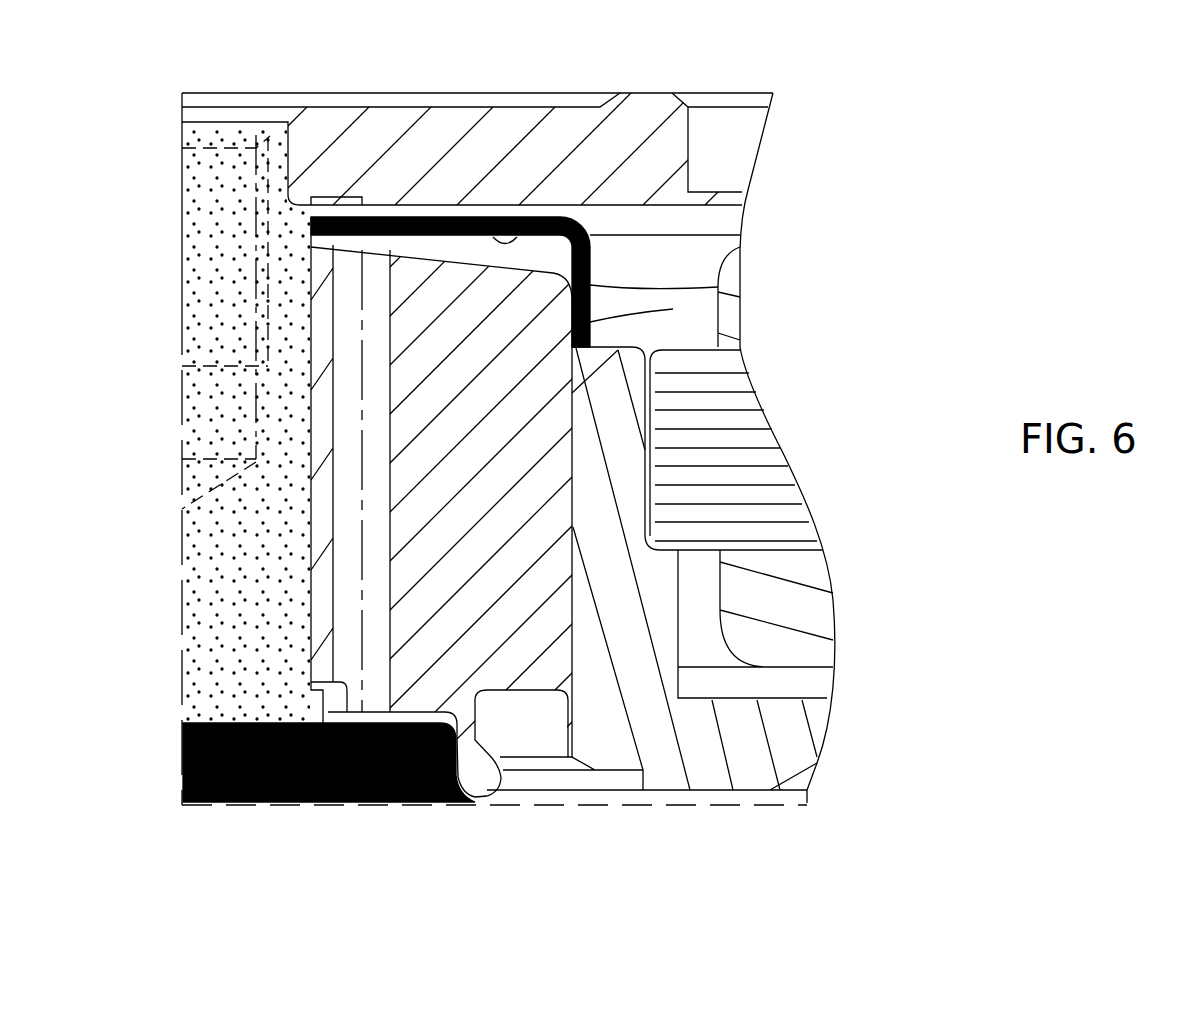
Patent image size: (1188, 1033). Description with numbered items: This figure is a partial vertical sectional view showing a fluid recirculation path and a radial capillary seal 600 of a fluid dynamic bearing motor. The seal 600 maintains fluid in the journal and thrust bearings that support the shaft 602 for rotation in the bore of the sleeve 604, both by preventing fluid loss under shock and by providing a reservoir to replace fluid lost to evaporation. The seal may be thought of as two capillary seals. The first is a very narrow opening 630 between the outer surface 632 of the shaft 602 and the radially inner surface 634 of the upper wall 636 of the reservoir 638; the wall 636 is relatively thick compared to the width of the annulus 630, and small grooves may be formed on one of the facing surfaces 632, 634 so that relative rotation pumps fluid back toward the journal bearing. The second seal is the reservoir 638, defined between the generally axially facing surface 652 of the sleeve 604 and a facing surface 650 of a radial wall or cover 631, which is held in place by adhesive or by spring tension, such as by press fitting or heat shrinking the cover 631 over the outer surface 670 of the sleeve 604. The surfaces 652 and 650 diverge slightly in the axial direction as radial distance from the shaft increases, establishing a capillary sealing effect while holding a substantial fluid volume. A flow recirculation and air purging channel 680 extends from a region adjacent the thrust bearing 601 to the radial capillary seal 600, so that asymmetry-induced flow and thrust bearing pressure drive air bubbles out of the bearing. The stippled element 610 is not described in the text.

The radial capillary seal 600 is at (450, 250).
The thrust bearing 601 is at (248, 690).
The shaft 602 is at (205, 138).
The sleeve 604 is at (513, 630).
The substrate 610 is at (311, 434).
The very narrow opening 630 is at (316, 220).
The radial wall or cover 631 is at (718, 287).
The outer surface of the shaft 632 is at (310, 232).
The radially inner surface of the upper wall 634 is at (325, 255).
The upper wall of the reservoir 636 is at (547, 226).
The reservoir 638 is at (405, 245).
The facing surface of the cover 650 is at (524, 238).
The axially facing surface of the sleeve 652 is at (540, 372).
The outer surface of the sleeve 670 is at (673, 309).
The flow recirculation and air purging channel 680 is at (379, 682).